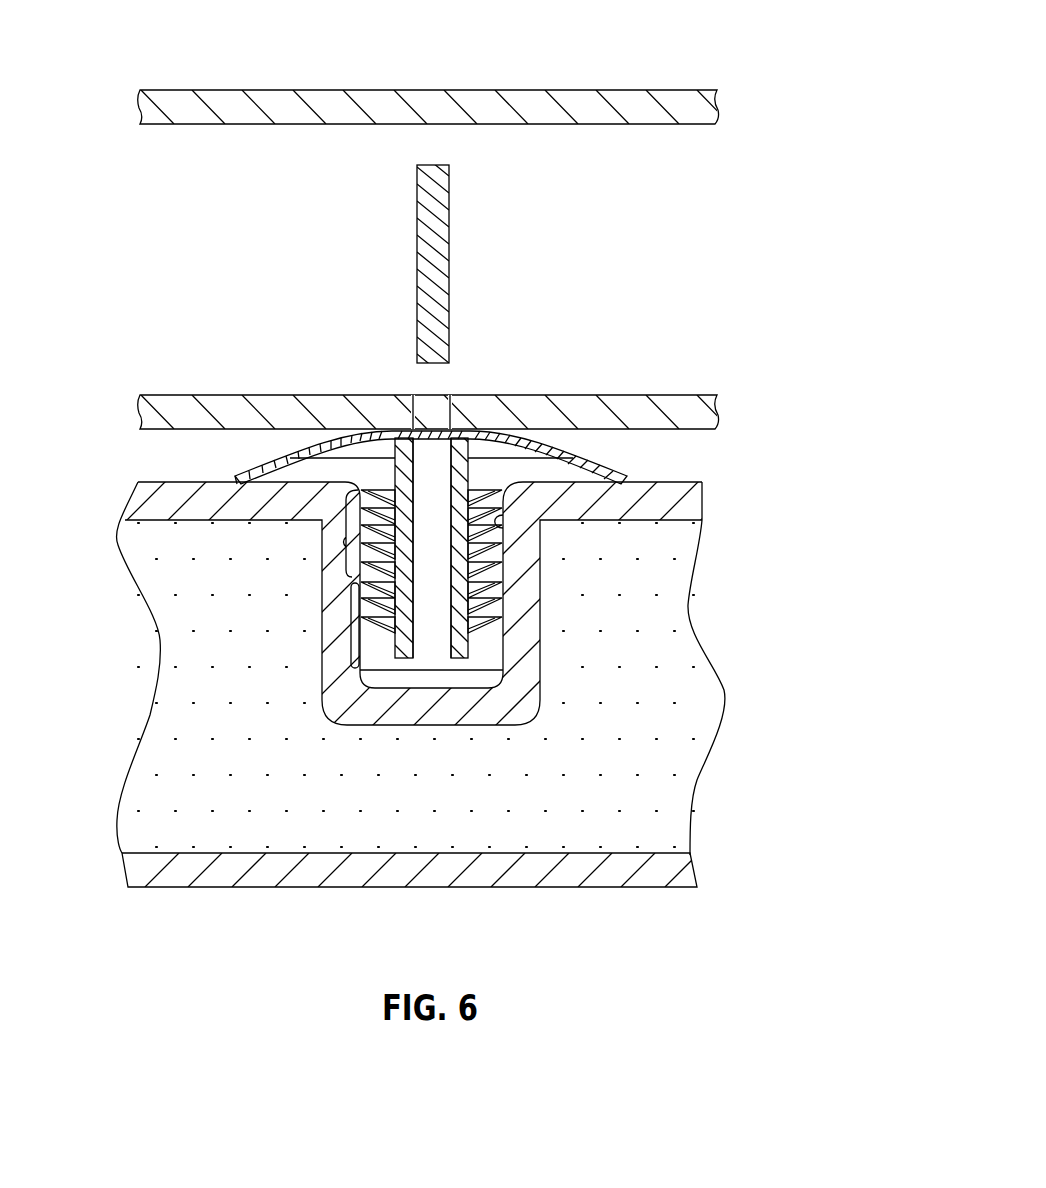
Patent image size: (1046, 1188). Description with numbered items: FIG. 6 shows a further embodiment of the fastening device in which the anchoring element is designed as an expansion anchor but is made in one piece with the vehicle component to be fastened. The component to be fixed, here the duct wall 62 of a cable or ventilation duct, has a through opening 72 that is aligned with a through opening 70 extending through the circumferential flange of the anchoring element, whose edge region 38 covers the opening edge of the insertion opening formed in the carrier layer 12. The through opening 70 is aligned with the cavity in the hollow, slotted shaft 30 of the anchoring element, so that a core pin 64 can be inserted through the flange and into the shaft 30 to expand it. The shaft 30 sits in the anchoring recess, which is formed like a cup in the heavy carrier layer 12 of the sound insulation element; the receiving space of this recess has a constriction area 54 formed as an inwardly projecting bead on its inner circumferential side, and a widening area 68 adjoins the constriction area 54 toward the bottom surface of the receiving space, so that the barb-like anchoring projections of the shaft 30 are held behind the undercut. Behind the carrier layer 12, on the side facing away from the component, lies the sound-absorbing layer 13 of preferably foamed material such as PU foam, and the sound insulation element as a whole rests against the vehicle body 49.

The duct wall 62 is at (598, 107).
The core pin 64 is at (447, 250).
The carrier layer 12 is at (648, 408).
The through opening 72 is at (428, 410).
The circumferential edge region 38 is at (357, 448).
The through opening 70 is at (440, 450).
The shaft 30 is at (500, 617).
The widening area 68 is at (355, 617).
The constriction area 54 is at (352, 540).
The sound-absorbing layer 13 is at (580, 800).
The vehicle body 49 is at (608, 867).